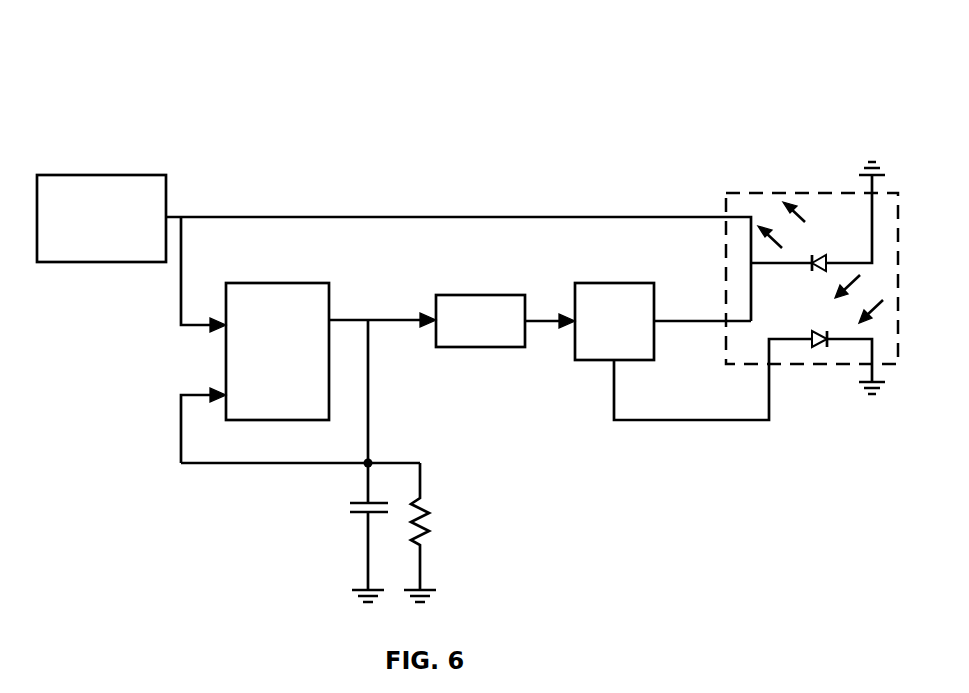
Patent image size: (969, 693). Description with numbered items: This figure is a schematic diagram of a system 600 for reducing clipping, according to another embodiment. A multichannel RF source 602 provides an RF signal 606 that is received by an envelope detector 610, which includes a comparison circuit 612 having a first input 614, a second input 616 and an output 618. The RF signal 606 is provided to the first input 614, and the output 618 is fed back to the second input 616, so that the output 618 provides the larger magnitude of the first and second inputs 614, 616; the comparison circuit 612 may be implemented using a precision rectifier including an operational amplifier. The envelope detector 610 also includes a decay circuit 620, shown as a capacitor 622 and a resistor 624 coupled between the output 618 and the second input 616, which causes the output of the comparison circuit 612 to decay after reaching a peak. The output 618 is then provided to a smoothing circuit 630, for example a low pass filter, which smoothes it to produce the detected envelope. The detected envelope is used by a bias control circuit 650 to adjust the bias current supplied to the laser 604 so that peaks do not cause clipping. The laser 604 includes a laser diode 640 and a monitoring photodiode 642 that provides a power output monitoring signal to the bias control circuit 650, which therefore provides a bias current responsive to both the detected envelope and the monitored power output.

The system for reducing clipping 600 is at (398, 126).
The multichannel RF source 602 is at (87, 175).
The laser 604 is at (763, 193).
The RF signal 606 is at (208, 217).
The envelope detector 610 is at (90, 397).
The comparison circuit 612 is at (226, 367).
The first input 614 is at (190, 325).
The second input 616 is at (198, 395).
The output 618 is at (357, 320).
The decay circuit 620 is at (344, 527).
The capacitor 622 is at (343, 513).
The resistor 624 is at (430, 535).
The smoothing circuit 630 is at (488, 347).
The laser diode 640 is at (822, 263).
The monitoring photodiode 642 is at (815, 339).
The bias control circuit 650 is at (593, 360).